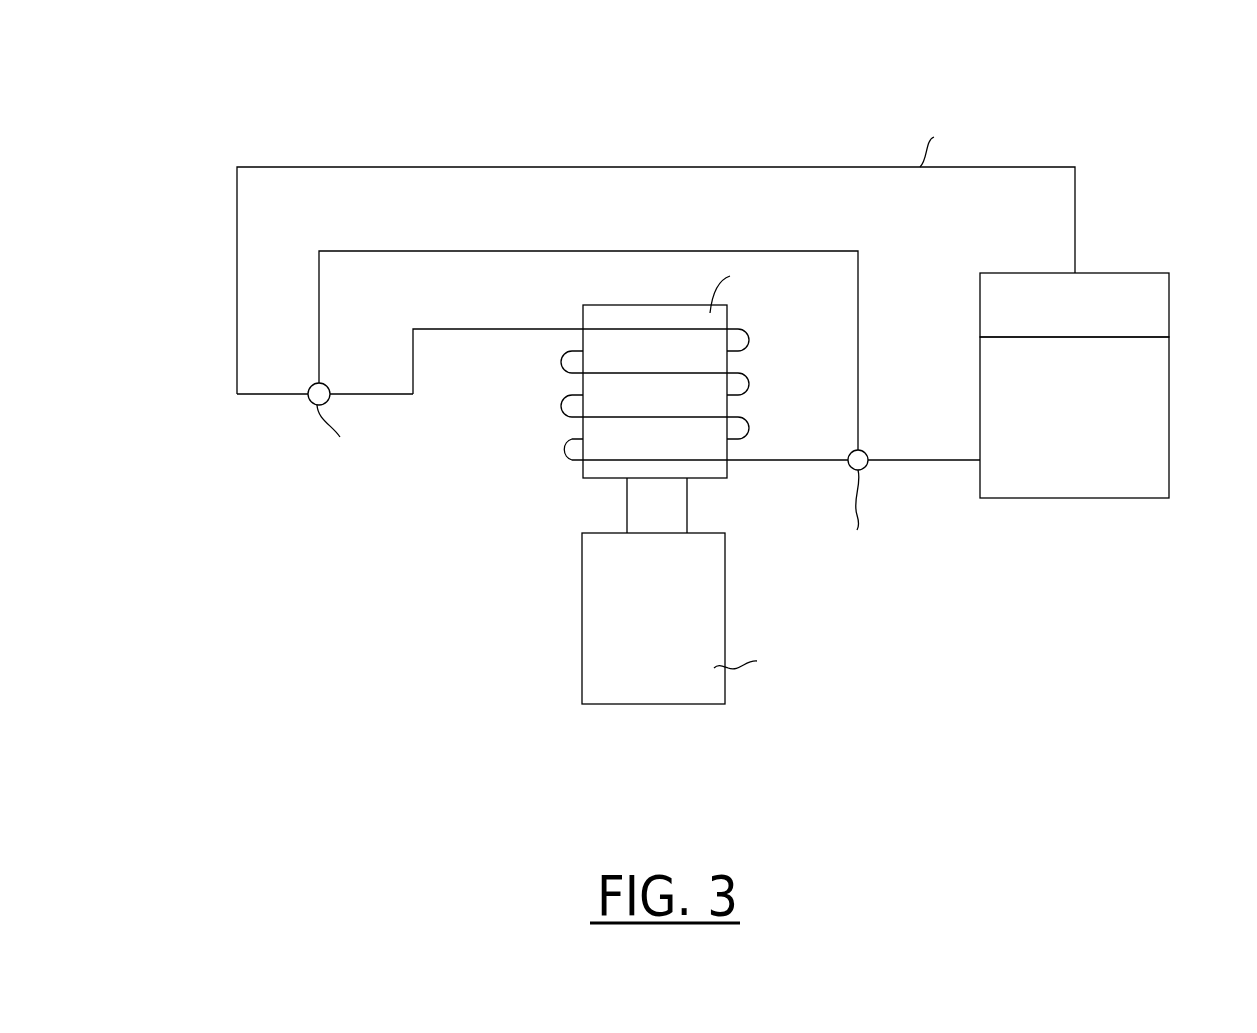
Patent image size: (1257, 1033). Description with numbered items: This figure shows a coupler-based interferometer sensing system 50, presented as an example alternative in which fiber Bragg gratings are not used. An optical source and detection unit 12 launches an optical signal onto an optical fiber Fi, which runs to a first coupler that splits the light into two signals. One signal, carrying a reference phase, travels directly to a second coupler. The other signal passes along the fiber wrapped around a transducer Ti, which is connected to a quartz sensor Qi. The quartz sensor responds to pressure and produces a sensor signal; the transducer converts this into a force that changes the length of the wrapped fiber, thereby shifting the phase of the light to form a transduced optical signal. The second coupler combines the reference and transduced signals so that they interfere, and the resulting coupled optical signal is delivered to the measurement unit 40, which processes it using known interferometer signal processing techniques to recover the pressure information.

The coupler-based interferometer sensing system 50 is at (358, 92).
The optical source and detection unit 12 is at (1163, 303).
The measurement unit 40 is at (1163, 406).